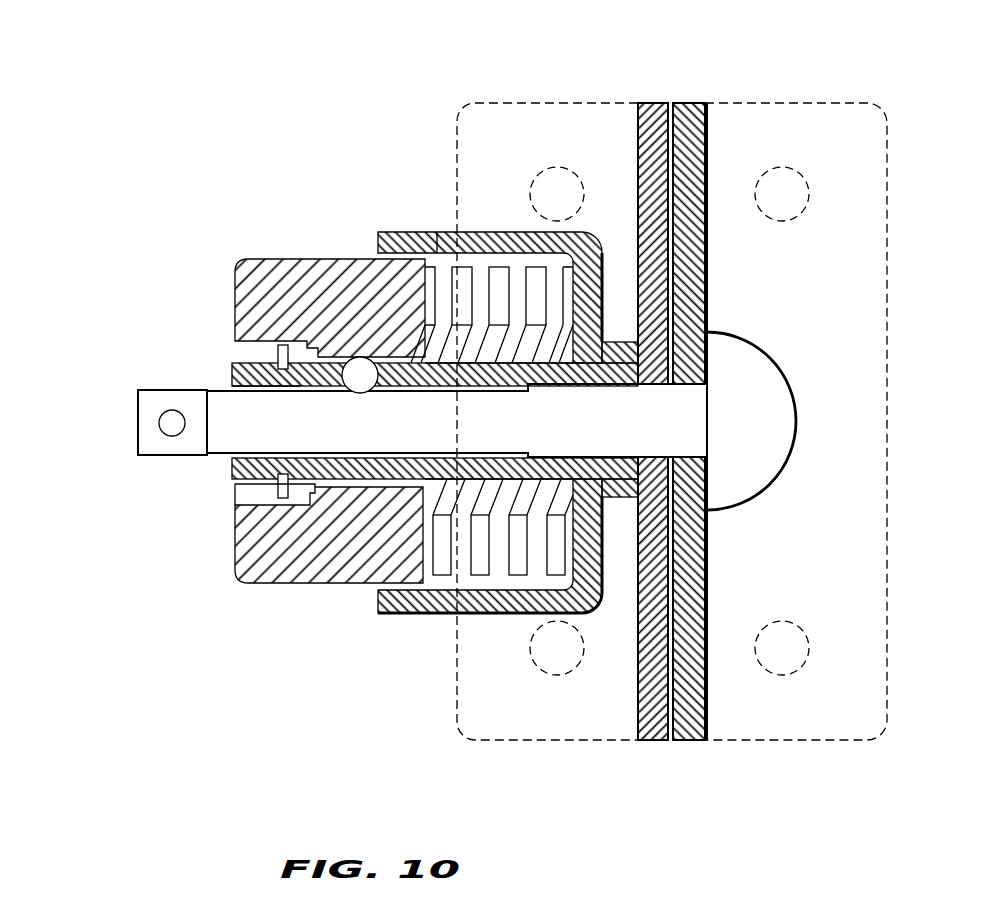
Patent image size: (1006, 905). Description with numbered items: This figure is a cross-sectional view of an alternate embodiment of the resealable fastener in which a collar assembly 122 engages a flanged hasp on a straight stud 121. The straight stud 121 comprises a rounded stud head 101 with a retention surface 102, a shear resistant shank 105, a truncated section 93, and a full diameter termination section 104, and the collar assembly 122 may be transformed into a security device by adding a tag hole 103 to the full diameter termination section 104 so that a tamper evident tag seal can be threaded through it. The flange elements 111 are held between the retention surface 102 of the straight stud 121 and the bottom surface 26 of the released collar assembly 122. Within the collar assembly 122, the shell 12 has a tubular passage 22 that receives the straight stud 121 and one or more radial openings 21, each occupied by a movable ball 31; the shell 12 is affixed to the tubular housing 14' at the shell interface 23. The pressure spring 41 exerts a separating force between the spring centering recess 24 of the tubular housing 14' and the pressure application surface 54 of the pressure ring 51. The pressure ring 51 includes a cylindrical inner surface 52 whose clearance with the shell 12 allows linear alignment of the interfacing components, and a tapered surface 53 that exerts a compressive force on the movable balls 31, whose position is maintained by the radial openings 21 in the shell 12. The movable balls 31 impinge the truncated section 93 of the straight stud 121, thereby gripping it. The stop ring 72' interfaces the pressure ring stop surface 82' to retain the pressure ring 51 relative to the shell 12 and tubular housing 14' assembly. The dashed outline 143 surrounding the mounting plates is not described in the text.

The shell 12 is at (404, 360).
The tubular housing 14' is at (474, 417).
The radial openings 21 is at (343, 353).
The tubular passage 22 is at (272, 390).
The shell interface 23 is at (607, 312).
The spring centering recess 24 is at (573, 550).
The bottom surface 26 is at (637, 490).
The movable balls 31 is at (360, 383).
The pressure spring 41 is at (469, 407).
The pressure ring 51 is at (329, 590).
The cylindrical inner surface 52 is at (372, 490).
The tapered surface 53 is at (318, 355).
The pressure application surface 54 is at (437, 253).
The stop ring 72' is at (381, 543).
The pressure ring stop surface 82' is at (267, 551).
The truncated section 93 is at (434, 479).
The rounded stud head 101 is at (798, 418).
The retention surface 102 is at (682, 500).
The tag hole 103 is at (172, 437).
The full diameter termination section 104 is at (420, 397).
The shear resistant shank 105 is at (670, 423).
The flange elements 111 is at (705, 463).
The straight stud 121 is at (827, 360).
The collar assembly 122 is at (452, 613).
The bracket outline 143 is at (888, 102).